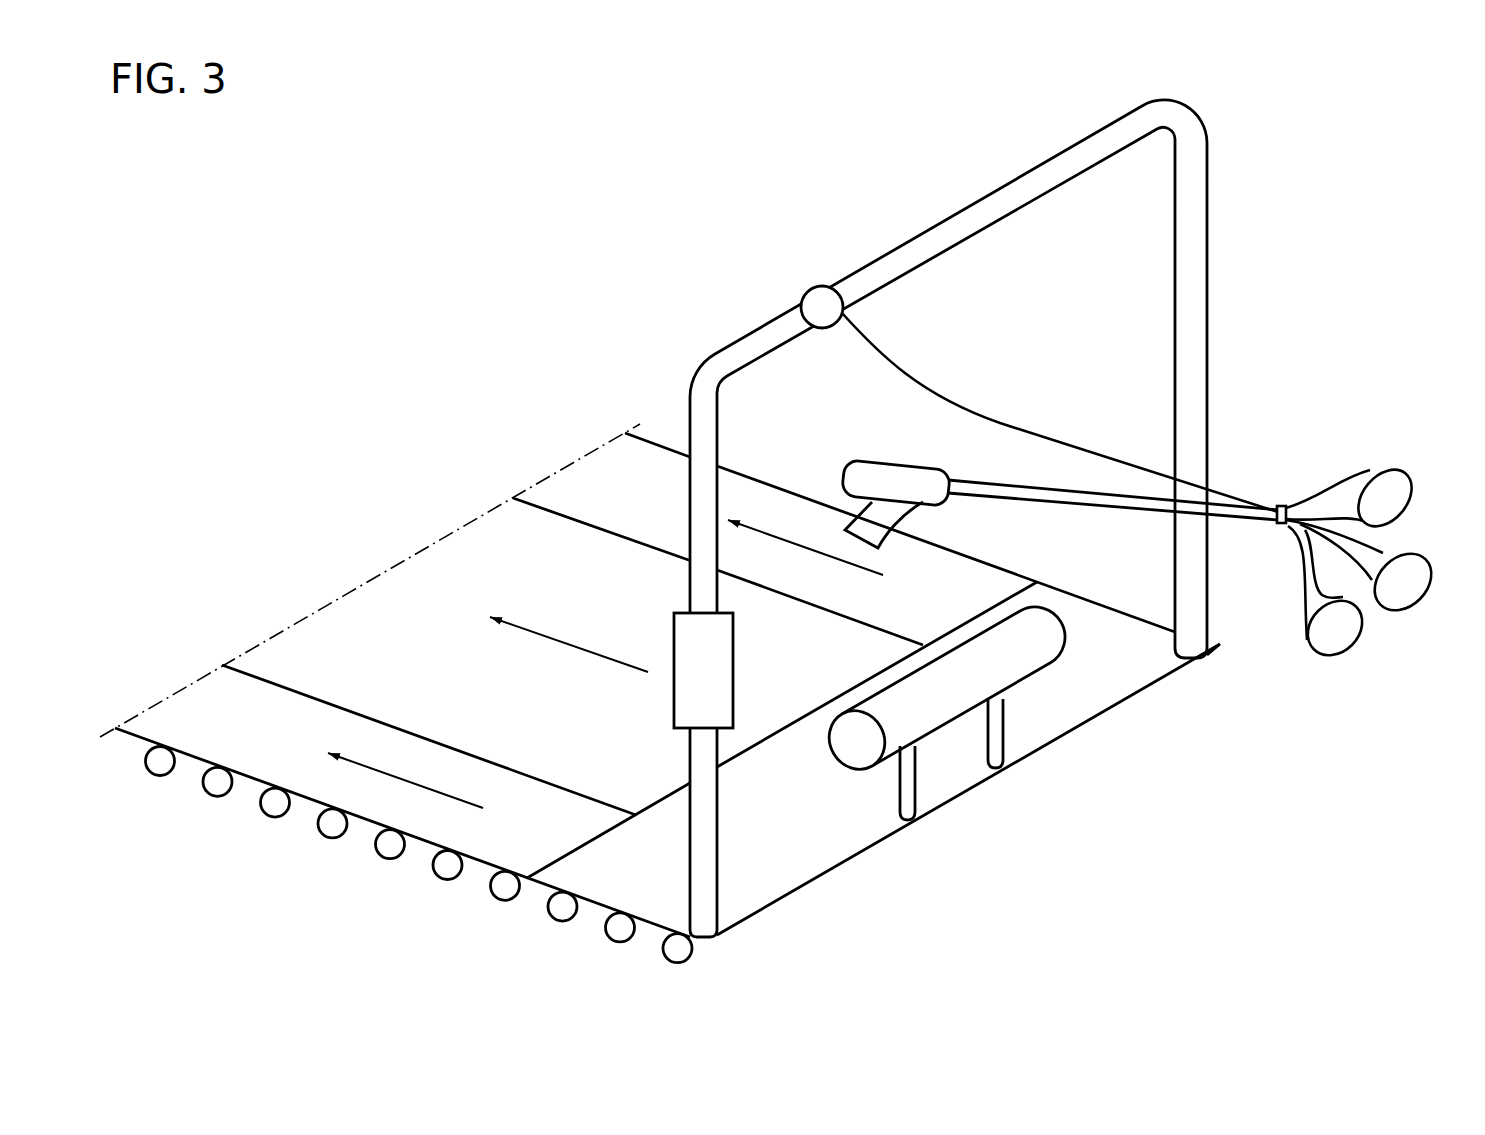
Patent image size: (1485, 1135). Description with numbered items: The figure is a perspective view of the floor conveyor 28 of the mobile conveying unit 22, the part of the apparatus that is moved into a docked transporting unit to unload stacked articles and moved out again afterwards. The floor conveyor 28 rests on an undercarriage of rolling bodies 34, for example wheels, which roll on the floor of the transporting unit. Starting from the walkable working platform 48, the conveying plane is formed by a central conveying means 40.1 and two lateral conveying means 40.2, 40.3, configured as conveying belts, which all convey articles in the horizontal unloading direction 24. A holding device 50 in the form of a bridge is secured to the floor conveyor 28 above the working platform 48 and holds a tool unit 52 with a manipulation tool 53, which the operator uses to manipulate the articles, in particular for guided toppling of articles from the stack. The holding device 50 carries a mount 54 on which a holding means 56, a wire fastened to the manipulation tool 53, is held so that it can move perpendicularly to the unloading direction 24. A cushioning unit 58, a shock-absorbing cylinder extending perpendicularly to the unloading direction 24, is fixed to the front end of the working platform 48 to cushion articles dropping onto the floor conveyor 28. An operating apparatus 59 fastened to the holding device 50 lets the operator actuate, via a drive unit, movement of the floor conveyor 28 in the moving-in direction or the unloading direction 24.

The conveying unit 22 is at (784, 538).
The unloading direction 24 is at (580, 647).
The floor conveyor 28 is at (637, 686).
The rolling bodies 34 is at (508, 887).
The central conveying means 40.1 is at (341, 608).
The lateral conveying means 40.2 is at (593, 472).
The lateral conveying means 40.3 is at (198, 695).
The walkable working platform 48 is at (792, 873).
The holding device 50 is at (925, 252).
The tool unit 52 is at (1398, 447).
The manipulation tool 53 is at (1057, 497).
The mount 54 is at (818, 298).
The holding means 56 is at (1022, 430).
The cushioning unit 58 is at (1050, 647).
The operating apparatus 59 is at (722, 665).